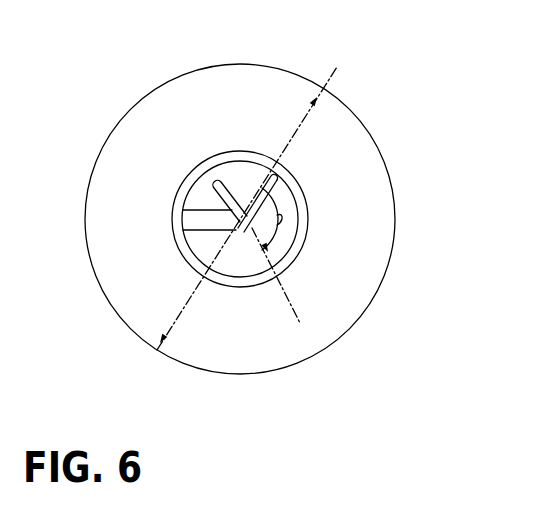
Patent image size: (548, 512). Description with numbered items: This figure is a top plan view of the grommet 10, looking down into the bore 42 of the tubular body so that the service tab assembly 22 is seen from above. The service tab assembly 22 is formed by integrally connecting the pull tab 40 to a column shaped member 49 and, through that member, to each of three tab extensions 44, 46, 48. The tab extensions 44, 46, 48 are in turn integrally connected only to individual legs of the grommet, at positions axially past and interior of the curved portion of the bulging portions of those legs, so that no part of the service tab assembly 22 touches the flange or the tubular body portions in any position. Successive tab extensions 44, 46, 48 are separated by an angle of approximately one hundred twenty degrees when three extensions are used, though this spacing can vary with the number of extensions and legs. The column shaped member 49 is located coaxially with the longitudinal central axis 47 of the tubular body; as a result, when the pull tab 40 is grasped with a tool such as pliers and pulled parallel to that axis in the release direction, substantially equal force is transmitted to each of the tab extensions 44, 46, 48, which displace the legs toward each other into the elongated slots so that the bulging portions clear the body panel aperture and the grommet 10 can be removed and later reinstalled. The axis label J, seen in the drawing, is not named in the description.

The grommet 10 is at (418, 122).
The service tab assembly 22 is at (190, 257).
The pull tab 40 is at (204, 195).
The bore 42 is at (213, 208).
The tab extension 44 is at (205, 198).
The tab extension 46 is at (244, 230).
The longitudinal central axis 47 is at (220, 210).
The tab extension 48 is at (268, 186).
The column shaped member 49 is at (222, 252).
The axis J is at (250, 196).